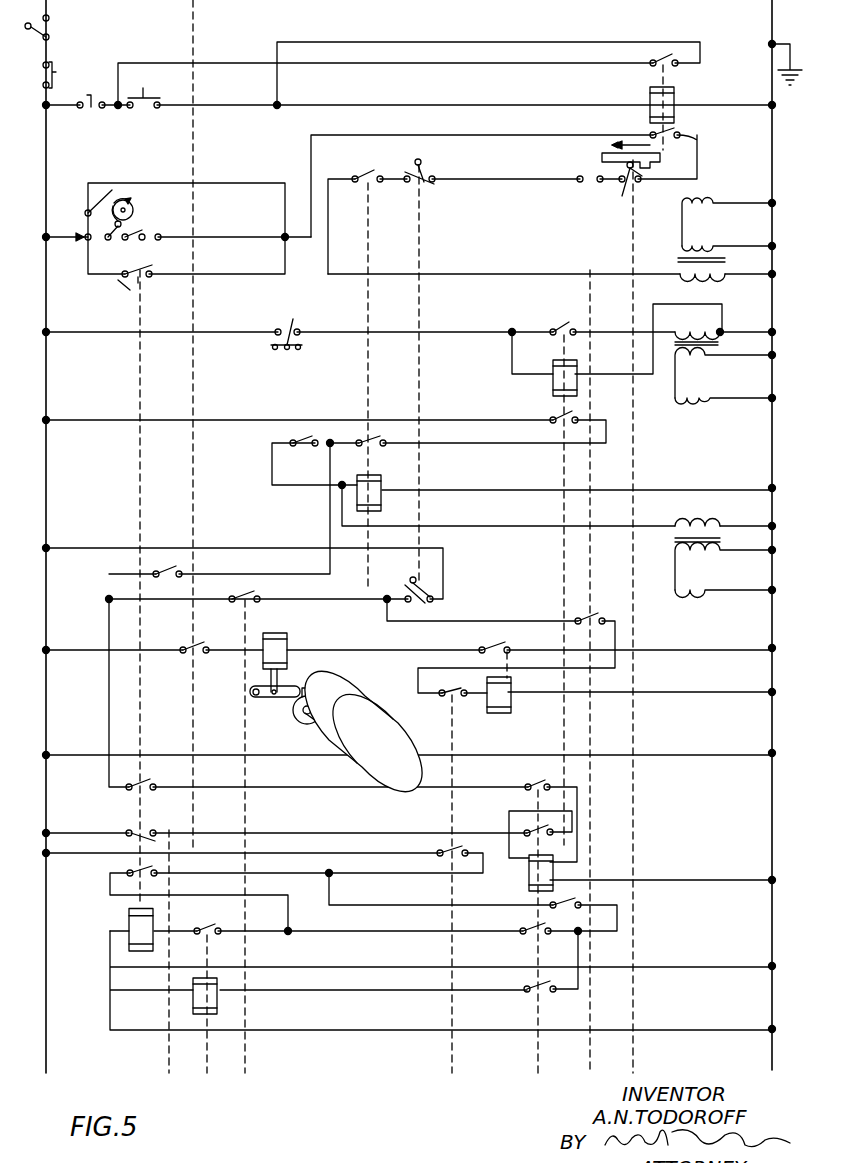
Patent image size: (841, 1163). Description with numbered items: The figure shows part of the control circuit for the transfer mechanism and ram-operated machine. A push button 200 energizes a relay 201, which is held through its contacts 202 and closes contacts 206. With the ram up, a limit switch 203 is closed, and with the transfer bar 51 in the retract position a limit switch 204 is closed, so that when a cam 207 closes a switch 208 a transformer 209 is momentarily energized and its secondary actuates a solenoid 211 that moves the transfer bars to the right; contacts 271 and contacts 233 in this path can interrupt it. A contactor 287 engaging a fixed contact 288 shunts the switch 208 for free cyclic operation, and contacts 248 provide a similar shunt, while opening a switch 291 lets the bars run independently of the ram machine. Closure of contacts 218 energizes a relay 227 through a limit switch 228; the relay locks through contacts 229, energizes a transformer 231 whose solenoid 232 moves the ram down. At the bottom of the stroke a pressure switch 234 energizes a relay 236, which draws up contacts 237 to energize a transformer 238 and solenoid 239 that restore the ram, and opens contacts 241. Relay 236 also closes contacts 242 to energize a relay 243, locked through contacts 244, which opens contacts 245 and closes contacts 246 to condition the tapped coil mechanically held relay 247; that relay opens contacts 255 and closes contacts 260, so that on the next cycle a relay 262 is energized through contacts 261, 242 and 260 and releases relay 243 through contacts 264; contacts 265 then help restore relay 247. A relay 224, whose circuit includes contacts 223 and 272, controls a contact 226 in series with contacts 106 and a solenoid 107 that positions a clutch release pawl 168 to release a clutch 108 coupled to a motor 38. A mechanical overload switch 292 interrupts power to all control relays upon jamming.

The mechanical overload switch 292 is at (49, 32).
The push button 200 is at (145, 92).
The contacts 202 is at (662, 60).
The relay 201 is at (650, 106).
The contacts 206 is at (690, 139).
The transfer bar 51 is at (602, 158).
The contacts 271 is at (583, 183).
The limit switch 204 is at (628, 185).
The solenoid 211 is at (697, 210).
The transformer 209 is at (680, 272).
The contacts 233 is at (362, 178).
The limit switch 203 is at (425, 181).
The transformer 238 is at (700, 330).
The solenoid 239 is at (697, 402).
The contacts 237 is at (558, 328).
The relay 236 is at (553, 380).
The contacts 241 is at (550, 421).
The pressure switch 234 is at (297, 300).
The contacts 229 is at (365, 440).
The relay 227 is at (362, 500).
The transformer 231 is at (702, 540).
The solenoid 232 is at (695, 593).
The switch 291 is at (175, 572).
The contacts 218 is at (250, 592).
The limit switch 228 is at (425, 593).
The solenoid 107 is at (288, 647).
The contacts 106 is at (198, 654).
The contact 226 is at (500, 647).
The contacts 272 is at (600, 626).
The relay 224 is at (500, 705).
The contacts 223 is at (450, 697).
The clutch release pawl 168 is at (272, 700).
The clutch 108 is at (332, 704).
The motor 38 is at (375, 737).
The contacts 246 is at (148, 782).
The contacts 245 is at (148, 833).
The contacts 265 is at (530, 832).
The contacts 261 is at (458, 848).
The tapped coil mechanically held relay 247 is at (528, 878).
The contacts 244 is at (128, 870).
The relay 243 is at (135, 923).
The contacts 264 is at (214, 917).
The contacts 242 is at (615, 912).
The contacts 255 is at (530, 935).
The relay 262 is at (222, 1000).
The contacts 260 is at (538, 992).
The contactor 287 is at (72, 236).
The fixed contact 288 is at (112, 190).
The cam 207 is at (133, 211).
The switch 208 is at (118, 226).
The contacts 248 is at (128, 282).